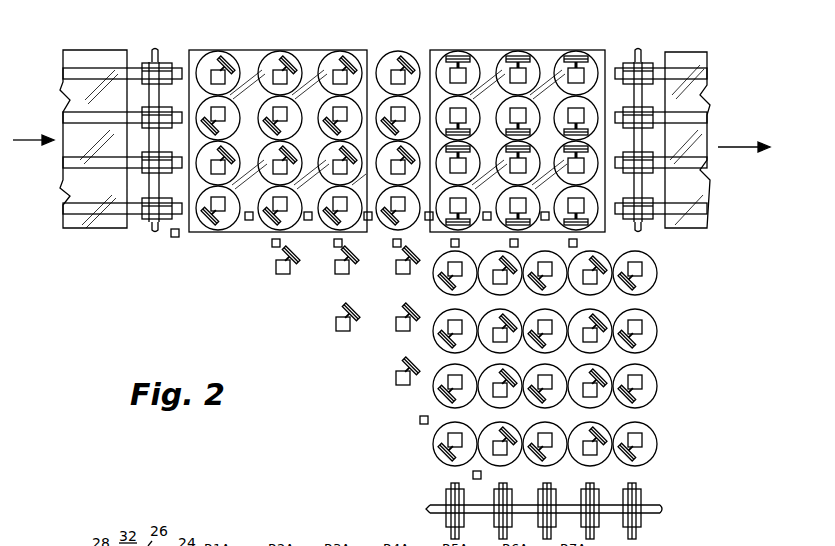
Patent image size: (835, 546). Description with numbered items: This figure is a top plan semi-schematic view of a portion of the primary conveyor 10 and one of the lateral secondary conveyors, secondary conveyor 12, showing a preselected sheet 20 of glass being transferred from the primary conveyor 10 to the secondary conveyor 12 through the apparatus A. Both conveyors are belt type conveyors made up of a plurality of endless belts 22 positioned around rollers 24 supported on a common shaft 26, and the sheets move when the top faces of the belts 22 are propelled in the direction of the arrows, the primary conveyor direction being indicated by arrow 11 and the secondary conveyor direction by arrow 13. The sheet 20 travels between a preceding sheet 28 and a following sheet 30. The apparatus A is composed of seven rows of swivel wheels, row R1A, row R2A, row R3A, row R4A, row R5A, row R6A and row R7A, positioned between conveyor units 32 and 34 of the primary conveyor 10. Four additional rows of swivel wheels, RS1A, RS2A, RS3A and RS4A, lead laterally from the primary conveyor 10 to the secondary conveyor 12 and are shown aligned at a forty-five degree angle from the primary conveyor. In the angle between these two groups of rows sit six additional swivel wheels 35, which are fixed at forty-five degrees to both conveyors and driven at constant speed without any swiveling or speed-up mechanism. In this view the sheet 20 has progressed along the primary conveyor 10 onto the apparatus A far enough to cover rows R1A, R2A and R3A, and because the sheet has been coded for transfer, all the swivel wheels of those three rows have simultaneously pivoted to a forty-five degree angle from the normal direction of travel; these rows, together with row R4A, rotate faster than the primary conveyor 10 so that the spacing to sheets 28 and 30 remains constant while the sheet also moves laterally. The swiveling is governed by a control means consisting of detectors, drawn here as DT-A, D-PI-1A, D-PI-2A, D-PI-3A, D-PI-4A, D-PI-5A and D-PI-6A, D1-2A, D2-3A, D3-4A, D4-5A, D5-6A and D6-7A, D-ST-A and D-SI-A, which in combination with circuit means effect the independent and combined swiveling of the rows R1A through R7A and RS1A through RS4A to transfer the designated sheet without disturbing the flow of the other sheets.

The primary conveyor 10 is at (97, 230).
The arrow 11 is at (24, 140).
The secondary conveyor 12 is at (674, 520).
The outfeed direction arrow 13 is at (525, 522).
The preselected sheet 20 is at (246, 50).
The endless belts 22 is at (74, 92).
The rollers 24 is at (168, 62).
The common shaft 26 is at (150, 56).
The preceding sheet 28 is at (68, 58).
The following sheet 30 is at (608, 50).
The conveyor unit 32 is at (129, 50).
The conveyor unit 34 is at (684, 55).
The swivel wheels 35 is at (286, 252).
The apparatus A is at (380, 52).
The row of swivel wheels R1A is at (230, 52).
The row of swivel wheels R2A is at (296, 52).
The row of swivel wheels R3A is at (352, 52).
The row of swivel wheels R4A is at (409, 52).
The row of swivel wheels R5A is at (468, 52).
The row of swivel wheels R6A is at (528, 52).
The row of swivel wheels R7A is at (586, 52).
The detector D1-2A is at (249, 212).
The detector D2-3A is at (308, 212).
The detector D3-4A is at (368, 212).
The detector D4-5A is at (429, 212).
The detector D5-6A is at (487, 212).
The detector D6-7A is at (545, 212).
The detector D-PI-1A is at (274, 247).
The detector D-PI-2A is at (336, 247).
The detector D-PI-3A is at (396, 247).
The detector D-PI-4A is at (456, 247).
The detector D-PI-5A is at (515, 247).
The detector D-PI-6A is at (578, 243).
The row of swivel wheels RS1A is at (660, 275).
The row of swivel wheels RS2A is at (660, 331).
The row of swivel wheels RS3A is at (660, 387).
The row of swivel wheels RS4A is at (660, 444).
The detector D-SI-A is at (420, 420).
The detector D-ST-A is at (473, 475).
The detector DT-A is at (171, 236).